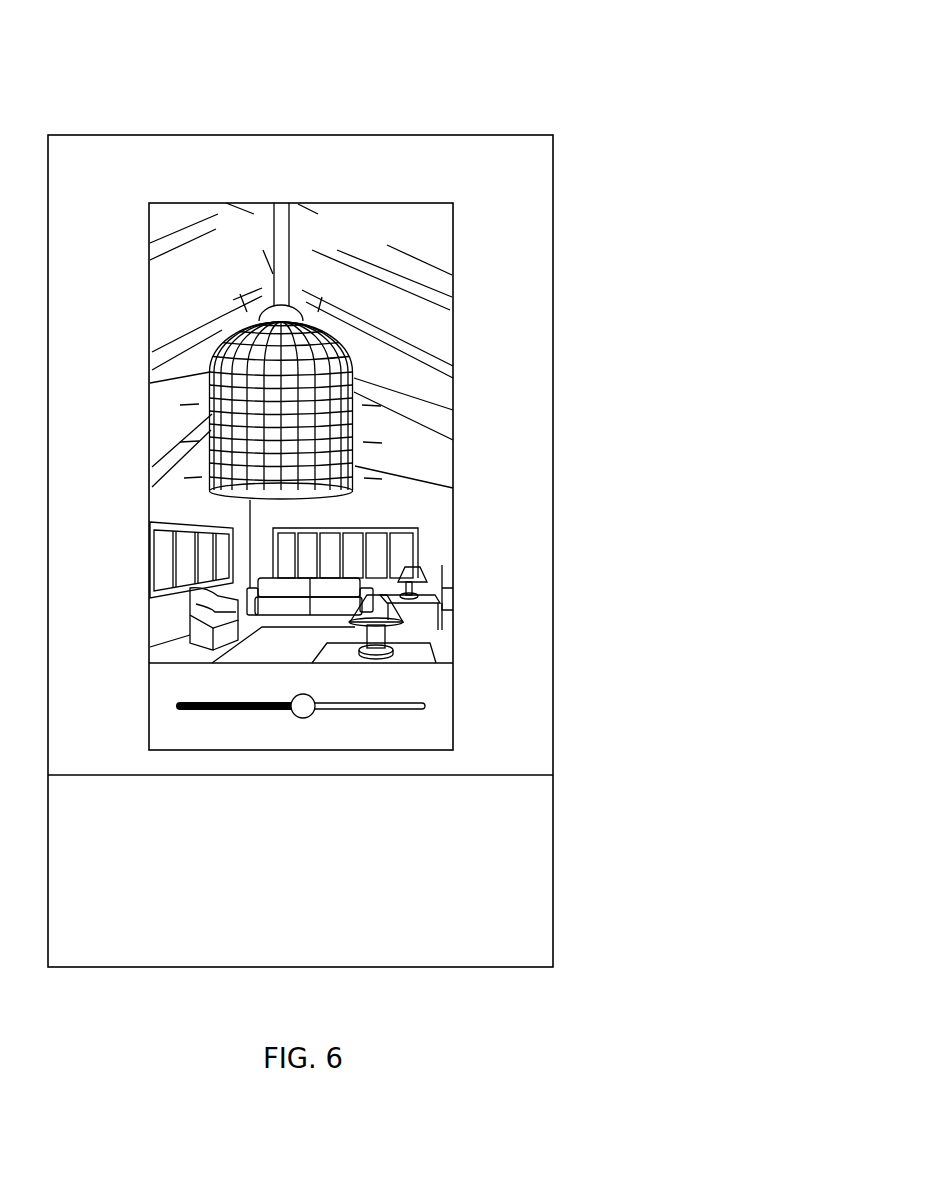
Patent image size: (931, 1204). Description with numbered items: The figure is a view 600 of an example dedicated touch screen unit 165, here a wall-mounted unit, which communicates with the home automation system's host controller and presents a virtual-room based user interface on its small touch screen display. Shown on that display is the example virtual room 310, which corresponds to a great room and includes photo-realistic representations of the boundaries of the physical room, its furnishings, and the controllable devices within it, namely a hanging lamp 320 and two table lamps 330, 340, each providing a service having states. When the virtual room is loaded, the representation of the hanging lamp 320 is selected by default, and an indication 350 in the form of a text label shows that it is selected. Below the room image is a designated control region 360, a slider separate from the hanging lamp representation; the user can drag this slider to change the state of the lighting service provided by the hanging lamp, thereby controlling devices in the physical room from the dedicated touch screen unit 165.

The view 600 is at (536, 52).
The dedicated touch screen unit 165 is at (553, 212).
The virtual room 310 is at (453, 330).
The hanging lamp 320 is at (355, 463).
The table lamp 330 is at (395, 637).
The table lamp 340 is at (430, 590).
The indication 350 is at (384, 232).
The designated control region 360 is at (425, 710).